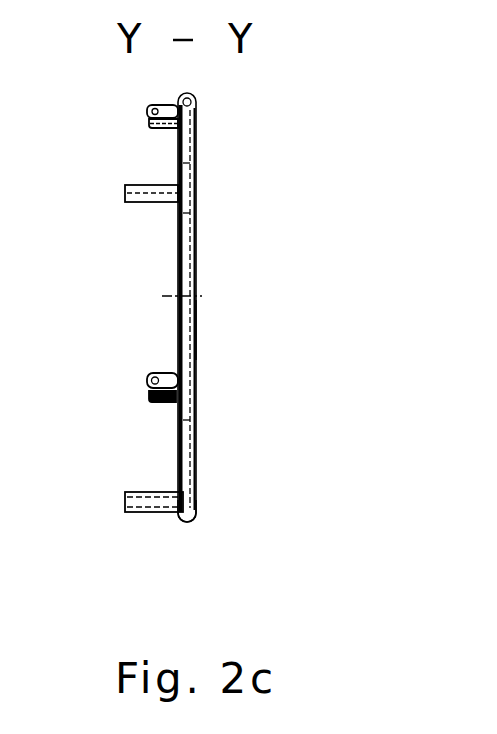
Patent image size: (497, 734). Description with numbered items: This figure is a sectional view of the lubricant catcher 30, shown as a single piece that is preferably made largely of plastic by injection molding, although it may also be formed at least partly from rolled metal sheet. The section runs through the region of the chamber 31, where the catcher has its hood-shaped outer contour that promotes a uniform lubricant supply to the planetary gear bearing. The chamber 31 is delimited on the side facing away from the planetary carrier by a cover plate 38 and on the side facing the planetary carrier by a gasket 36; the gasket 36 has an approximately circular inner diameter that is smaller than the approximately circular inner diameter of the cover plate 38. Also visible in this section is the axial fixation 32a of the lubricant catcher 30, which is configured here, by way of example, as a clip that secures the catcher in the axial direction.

The lubricant catcher 30 is at (201, 192).
The chamber 31 is at (195, 492).
The axial fixation 32a is at (161, 133).
The gasket 36 is at (178, 273).
The cover plate 38 is at (193, 327).